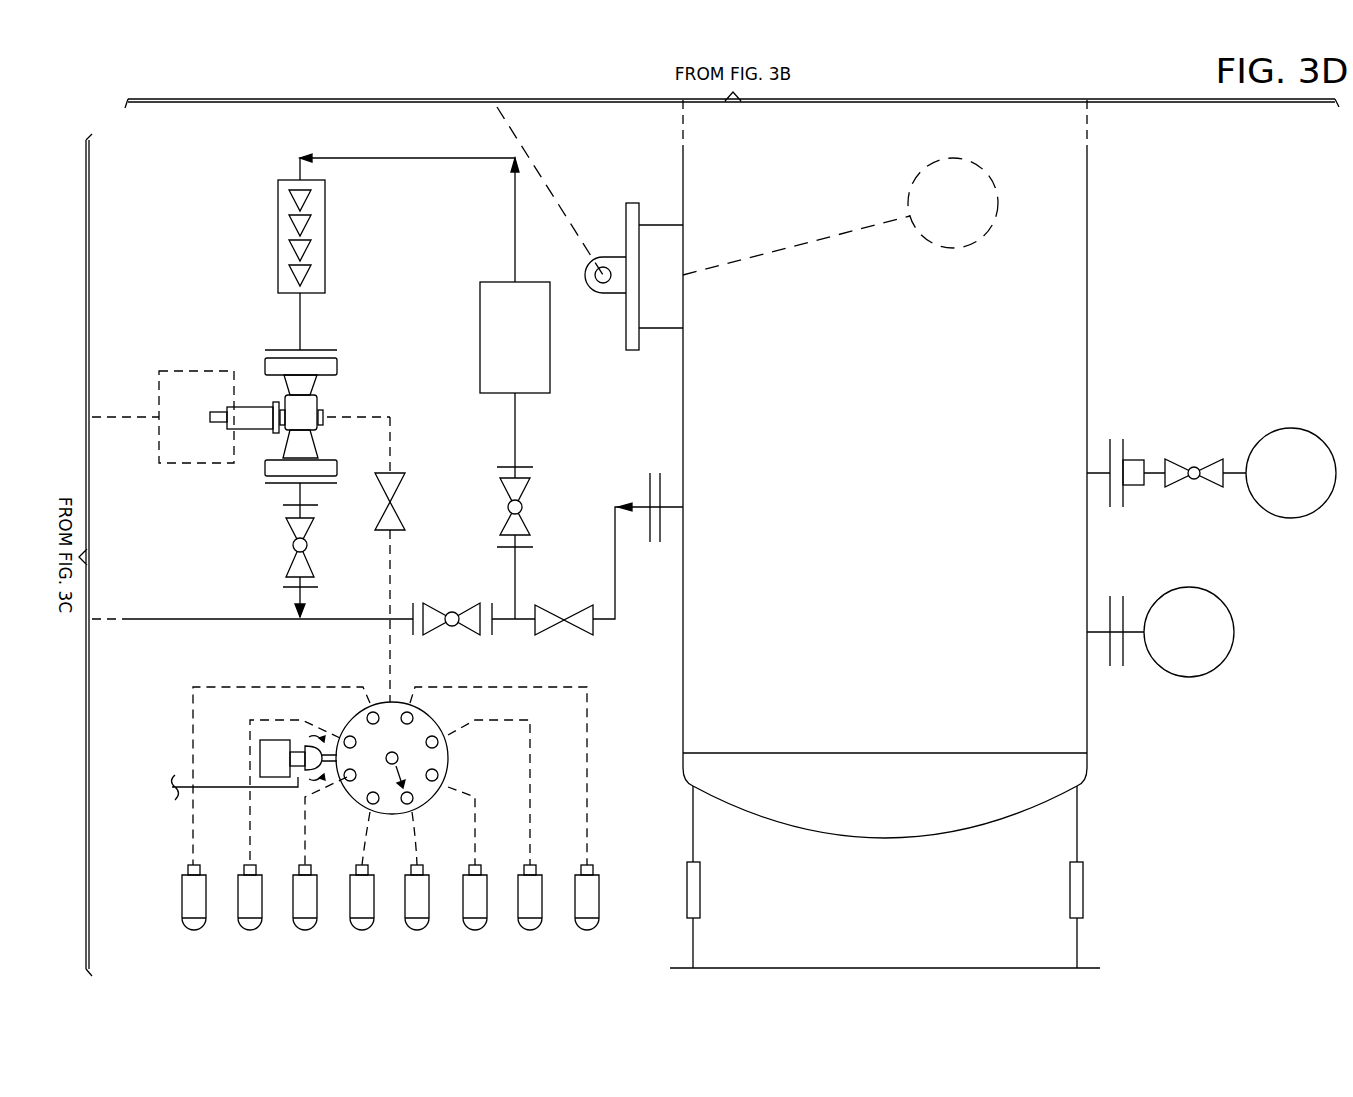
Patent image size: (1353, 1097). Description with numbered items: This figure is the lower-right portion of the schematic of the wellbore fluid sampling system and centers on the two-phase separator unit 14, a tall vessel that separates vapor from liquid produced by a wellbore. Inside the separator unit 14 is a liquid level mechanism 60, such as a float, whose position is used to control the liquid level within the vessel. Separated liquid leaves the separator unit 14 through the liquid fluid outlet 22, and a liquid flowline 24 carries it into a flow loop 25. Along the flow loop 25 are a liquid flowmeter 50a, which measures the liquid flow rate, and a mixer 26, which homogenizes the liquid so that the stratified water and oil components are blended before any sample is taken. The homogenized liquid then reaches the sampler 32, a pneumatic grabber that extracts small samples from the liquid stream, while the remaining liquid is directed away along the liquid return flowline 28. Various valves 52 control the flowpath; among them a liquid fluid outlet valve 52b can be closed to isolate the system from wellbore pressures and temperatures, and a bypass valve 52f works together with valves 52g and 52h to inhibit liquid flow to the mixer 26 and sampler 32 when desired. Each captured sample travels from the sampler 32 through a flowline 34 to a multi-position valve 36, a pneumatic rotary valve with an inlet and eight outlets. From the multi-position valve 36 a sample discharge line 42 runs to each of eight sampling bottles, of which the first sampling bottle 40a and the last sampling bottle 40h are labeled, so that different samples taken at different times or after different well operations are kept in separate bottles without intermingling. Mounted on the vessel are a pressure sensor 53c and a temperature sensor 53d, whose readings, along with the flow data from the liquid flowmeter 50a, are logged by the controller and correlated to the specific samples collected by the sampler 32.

The two-phase separator unit 14 is at (1089, 318).
The liquid fluid outlet 22 is at (655, 545).
The liquid flowline 24 is at (612, 550).
The flow loop 25 is at (297, 337).
The mixer 26 is at (277, 238).
The liquid return flowline 28 is at (212, 623).
The sampler 32 is at (322, 428).
The flowline 34 is at (388, 560).
The multi-position valve 36 is at (450, 760).
The sampling bottle 40a is at (182, 885).
The sampling bottle 40h is at (600, 895).
The sample discharge line 42 is at (193, 820).
The liquid flowmeter 50a is at (478, 332).
The valves 52 is at (400, 513).
The liquid fluid outlet valve 52b is at (575, 630).
The bypass valve 52f is at (455, 628).
The valve 52g is at (530, 507).
The valve 52h is at (292, 548).
The pressure sensor 53c is at (1280, 430).
The temperature sensor 53d is at (1185, 676).
The liquid level mechanism 60 is at (797, 247).